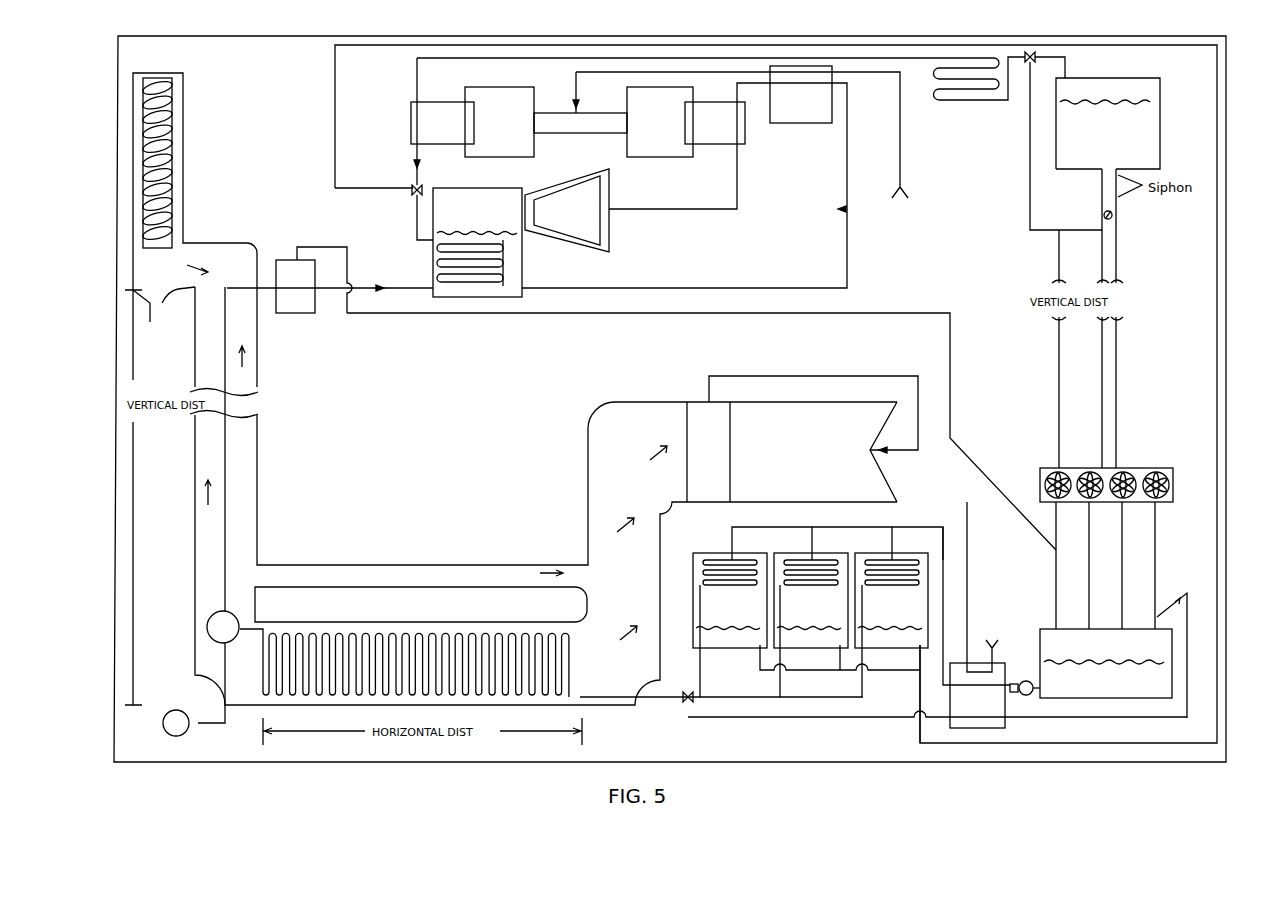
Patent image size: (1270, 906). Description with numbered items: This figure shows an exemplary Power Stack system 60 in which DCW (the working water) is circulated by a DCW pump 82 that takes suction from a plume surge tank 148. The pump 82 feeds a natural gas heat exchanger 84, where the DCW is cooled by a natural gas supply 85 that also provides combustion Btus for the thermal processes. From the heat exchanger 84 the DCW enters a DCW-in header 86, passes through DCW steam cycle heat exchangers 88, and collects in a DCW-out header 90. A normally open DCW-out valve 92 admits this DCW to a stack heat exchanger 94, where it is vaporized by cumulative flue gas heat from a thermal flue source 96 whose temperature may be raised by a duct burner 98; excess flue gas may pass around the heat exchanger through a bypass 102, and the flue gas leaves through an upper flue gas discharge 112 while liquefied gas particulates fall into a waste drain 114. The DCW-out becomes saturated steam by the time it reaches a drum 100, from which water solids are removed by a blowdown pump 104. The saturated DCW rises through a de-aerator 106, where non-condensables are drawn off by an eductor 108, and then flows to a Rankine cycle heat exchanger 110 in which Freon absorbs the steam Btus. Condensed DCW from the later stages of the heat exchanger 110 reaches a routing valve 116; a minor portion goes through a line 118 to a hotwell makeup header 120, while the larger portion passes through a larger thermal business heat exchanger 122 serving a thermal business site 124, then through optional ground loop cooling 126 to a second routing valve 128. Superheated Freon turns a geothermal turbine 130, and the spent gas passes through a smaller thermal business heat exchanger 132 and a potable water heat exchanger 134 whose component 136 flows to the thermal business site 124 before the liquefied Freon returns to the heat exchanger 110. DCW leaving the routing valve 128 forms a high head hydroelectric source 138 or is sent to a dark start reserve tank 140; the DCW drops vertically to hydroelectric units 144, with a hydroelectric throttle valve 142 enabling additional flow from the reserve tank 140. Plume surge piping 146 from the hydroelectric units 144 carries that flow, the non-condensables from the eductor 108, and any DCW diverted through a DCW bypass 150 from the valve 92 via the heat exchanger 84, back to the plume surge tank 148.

The air conditioning system 60 is at (934, 29).
The DCW pump 82 is at (1024, 680).
The natural gas heat exchanger 84 is at (976, 615).
The natural gas supply 85 is at (991, 636).
The DCW-in header 86 is at (912, 527).
The DCW steam cycle heat exchangers 88 is at (863, 594).
The DCW-out header 90 is at (863, 697).
The DCW-out valve 92 is at (688, 692).
The stack heat exchanger 94 is at (580, 648).
The thermal flue source 96 is at (813, 439).
The duct burner 98 is at (708, 452).
The drum 100 is at (218, 505).
The bypass 102 is at (409, 581).
The blowdown pump 104 is at (176, 723).
The de-aerator 106 is at (330, 280).
The eductor 108 is at (585, 316).
The Rankine cycle heat exchanger 110 is at (505, 286).
The upper flue gas discharge 112 is at (183, 106).
The waste drain 114 is at (162, 306).
The routing valve 116 is at (424, 190).
The line 118 is at (397, 189).
The hotwell makeup header 120 is at (920, 672).
The larger thermal business heat exchanger 122 is at (442, 123).
The thermal business site 124 is at (579, 122).
The ground loop cooling 126 is at (957, 101).
The routing valve 128 is at (1027, 64).
The geothermal turbine 130 is at (684, 185).
The smaller thermal business heat exchanger 132 is at (715, 123).
The potable water heat exchanger 134 is at (801, 94).
The potable water heat exchanger component 136 is at (743, 146).
The high head hydroelectric source 138 is at (1034, 219).
The dark start reserve tank 140 is at (1108, 123).
The hydroelectric throttle valve 142 is at (1113, 219).
The hydroelectric units 144 is at (1135, 468).
The plume surge piping 146 is at (1156, 589).
The plume surge tank 148 is at (1113, 655).
The DCW bypass 150 is at (790, 717).